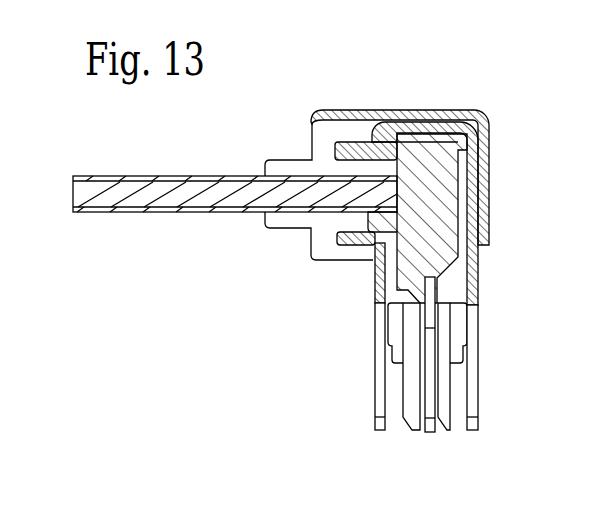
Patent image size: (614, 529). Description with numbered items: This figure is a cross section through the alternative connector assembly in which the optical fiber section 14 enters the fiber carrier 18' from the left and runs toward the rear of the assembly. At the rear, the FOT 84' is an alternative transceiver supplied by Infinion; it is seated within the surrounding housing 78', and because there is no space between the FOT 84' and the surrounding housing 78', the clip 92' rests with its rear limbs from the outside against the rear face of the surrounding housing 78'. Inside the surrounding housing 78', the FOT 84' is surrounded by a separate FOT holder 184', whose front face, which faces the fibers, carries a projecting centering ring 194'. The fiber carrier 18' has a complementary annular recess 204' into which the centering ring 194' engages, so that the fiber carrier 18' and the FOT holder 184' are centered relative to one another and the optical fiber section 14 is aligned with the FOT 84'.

The first optical fiber section 14 is at (178, 214).
The fiber carrier 18' is at (319, 230).
The clip 92' is at (444, 177).
The FOT holder 184' is at (477, 218).
The surrounding housing 78' is at (470, 213).
The centering ring 194' is at (383, 108).
The annular recess 204' is at (342, 331).
The FOT 84' is at (478, 354).